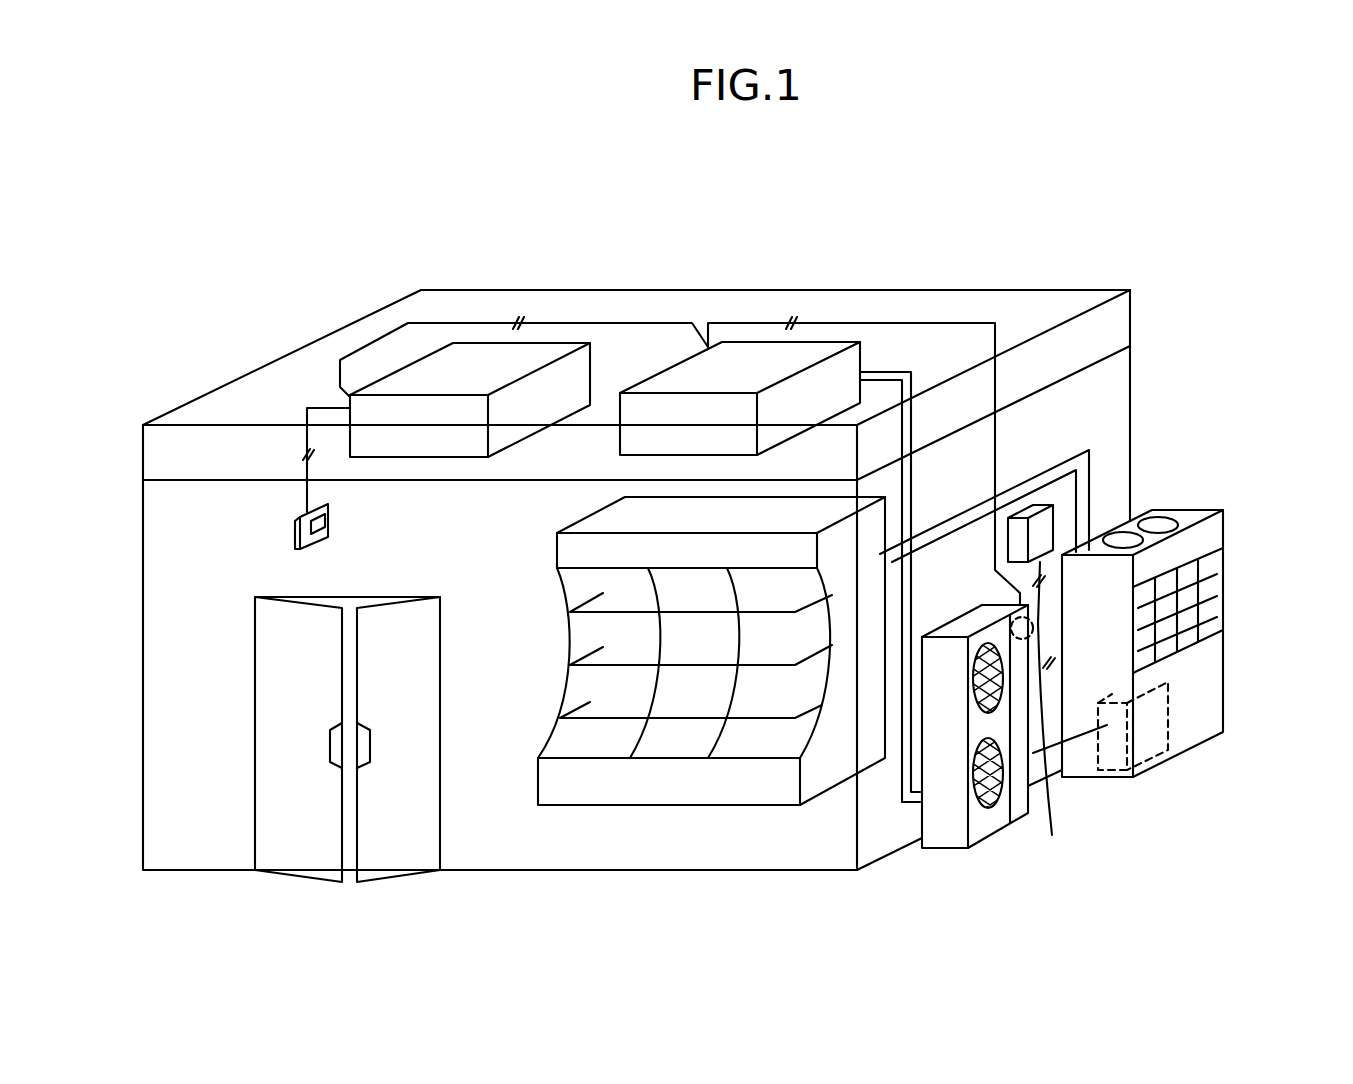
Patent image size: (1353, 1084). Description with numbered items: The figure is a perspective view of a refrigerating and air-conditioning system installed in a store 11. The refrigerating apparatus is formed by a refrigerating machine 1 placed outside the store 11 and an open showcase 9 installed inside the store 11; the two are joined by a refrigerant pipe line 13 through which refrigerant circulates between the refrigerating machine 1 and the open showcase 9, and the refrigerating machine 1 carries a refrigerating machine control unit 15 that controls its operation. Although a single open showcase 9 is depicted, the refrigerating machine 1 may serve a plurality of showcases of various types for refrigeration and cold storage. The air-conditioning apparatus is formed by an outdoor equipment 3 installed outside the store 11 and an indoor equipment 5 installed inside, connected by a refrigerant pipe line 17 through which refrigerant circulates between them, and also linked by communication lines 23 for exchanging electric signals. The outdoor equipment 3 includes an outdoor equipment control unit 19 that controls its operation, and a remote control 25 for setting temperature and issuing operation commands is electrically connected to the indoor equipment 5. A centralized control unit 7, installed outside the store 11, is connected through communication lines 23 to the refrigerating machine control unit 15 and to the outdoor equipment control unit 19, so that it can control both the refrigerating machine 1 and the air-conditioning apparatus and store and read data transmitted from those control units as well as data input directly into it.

The refrigerating machine 1 is at (1210, 695).
The outdoor equipment 3 is at (980, 833).
The indoor equipment 5 is at (677, 382).
The centralized control unit 7 is at (1040, 517).
The open showcase 9 is at (667, 795).
The store 11 is at (233, 398).
The refrigerant pipe line 13 is at (1093, 487).
The refrigerating machine control unit 15 is at (1152, 772).
The refrigerant pipe line 17 is at (878, 370).
The outdoor equipment control unit 19 is at (997, 613).
The communication lines 23 is at (763, 323).
The remote control 25 is at (330, 532).